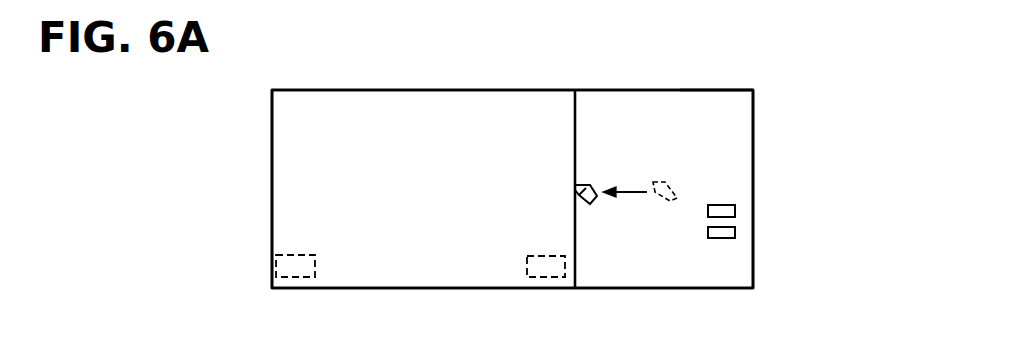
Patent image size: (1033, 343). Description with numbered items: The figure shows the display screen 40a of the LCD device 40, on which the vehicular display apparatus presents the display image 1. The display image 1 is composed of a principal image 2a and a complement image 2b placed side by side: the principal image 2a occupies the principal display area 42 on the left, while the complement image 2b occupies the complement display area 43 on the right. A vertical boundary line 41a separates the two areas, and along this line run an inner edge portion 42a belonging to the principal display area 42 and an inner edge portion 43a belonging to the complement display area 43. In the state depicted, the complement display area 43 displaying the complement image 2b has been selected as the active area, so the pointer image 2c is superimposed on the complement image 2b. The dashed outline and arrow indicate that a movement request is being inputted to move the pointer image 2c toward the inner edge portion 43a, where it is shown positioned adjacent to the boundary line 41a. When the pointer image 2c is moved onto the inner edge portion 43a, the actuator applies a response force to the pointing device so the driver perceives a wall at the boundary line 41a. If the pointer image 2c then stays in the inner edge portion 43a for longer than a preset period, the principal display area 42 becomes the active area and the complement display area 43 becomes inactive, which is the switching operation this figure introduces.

The display image 1 is at (748, 87).
The principal image 2a is at (312, 128).
The complement image 2b is at (717, 118).
The pointer image 2c is at (582, 204).
The LCD device 40 is at (754, 107).
The display screen 40a is at (725, 158).
The boundary line 41a is at (575, 122).
The principal display area 42 is at (414, 275).
The inner edge portion 42a is at (565, 147).
The complement display area 43 is at (662, 275).
The inner edge portion 43a is at (583, 147).